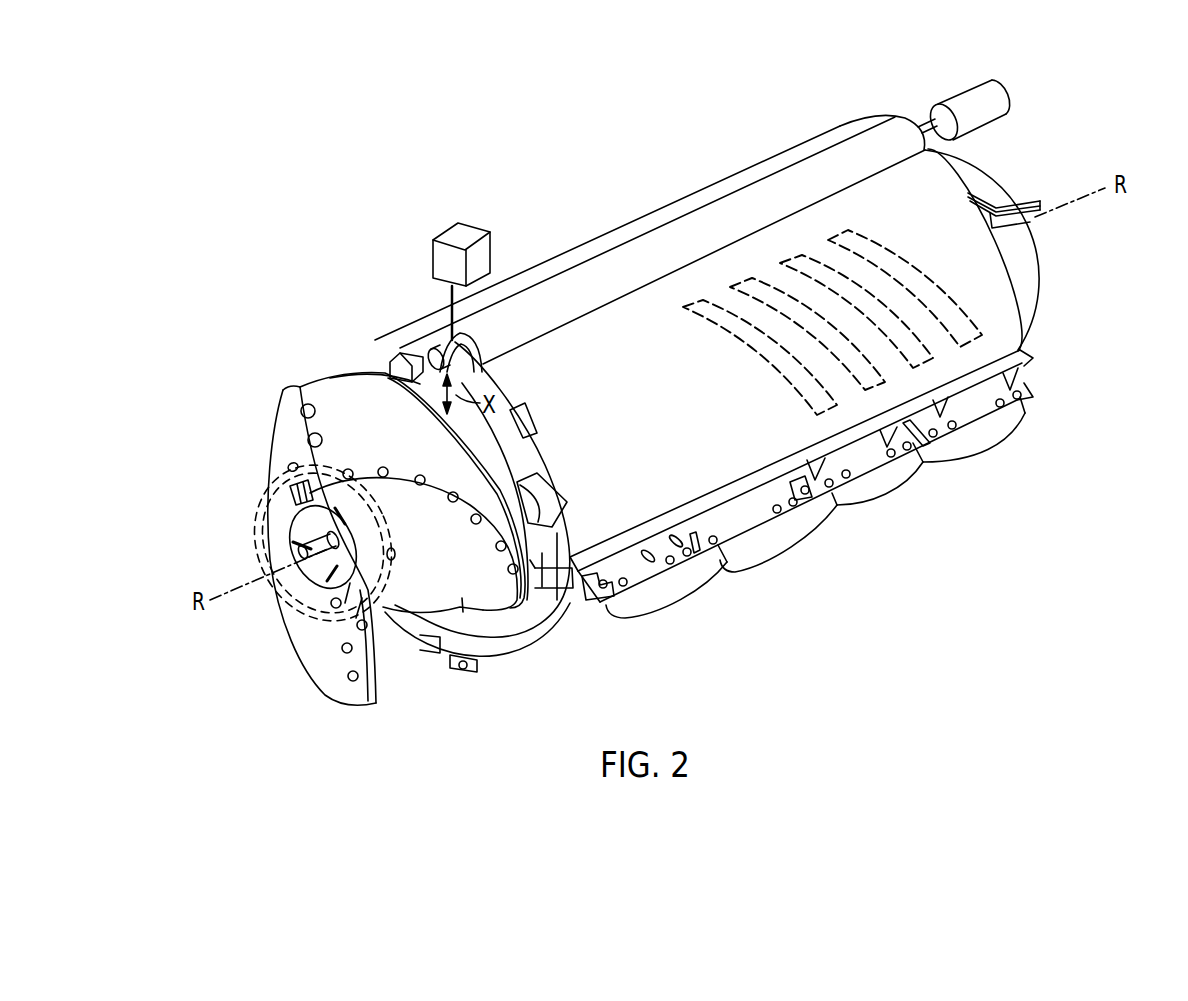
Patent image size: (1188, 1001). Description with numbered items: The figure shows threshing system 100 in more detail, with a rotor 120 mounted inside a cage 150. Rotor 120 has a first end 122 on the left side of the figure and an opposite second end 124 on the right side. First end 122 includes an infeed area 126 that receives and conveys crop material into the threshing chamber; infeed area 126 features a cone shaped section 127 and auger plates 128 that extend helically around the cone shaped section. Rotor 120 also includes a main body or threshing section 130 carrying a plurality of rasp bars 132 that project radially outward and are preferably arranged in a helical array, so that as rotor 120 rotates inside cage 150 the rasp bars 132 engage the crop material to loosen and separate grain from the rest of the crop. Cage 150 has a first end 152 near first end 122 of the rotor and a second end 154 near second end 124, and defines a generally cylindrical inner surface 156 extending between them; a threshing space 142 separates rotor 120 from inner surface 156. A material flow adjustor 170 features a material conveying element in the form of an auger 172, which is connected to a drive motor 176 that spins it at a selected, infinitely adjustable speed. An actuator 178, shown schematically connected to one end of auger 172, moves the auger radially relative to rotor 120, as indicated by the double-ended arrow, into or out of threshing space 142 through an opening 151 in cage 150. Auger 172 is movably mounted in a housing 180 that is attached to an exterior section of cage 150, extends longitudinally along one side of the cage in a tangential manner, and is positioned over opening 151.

The threshing system 100 is at (249, 150).
The rotor 120 is at (392, 700).
The first end 122 is at (303, 385).
The second end 124 is at (1008, 185).
The infeed area 126 is at (293, 482).
The cone shaped section 127 is at (463, 612).
The auger plates 128 is at (330, 428).
The threshing section 130 is at (568, 568).
The rasp bars 132 is at (393, 357).
The threshing space 142 is at (585, 580).
The cage 150 is at (823, 110).
The opening 151 is at (500, 397).
The first end 152 is at (403, 353).
The second end 154 is at (1027, 322).
The inner surface 156 is at (363, 367).
The material flow adjustor 170 is at (707, 198).
The auger 172 is at (443, 347).
The drive motor 176 is at (975, 95).
The actuator 178 is at (455, 233).
The housing 180 is at (627, 260).